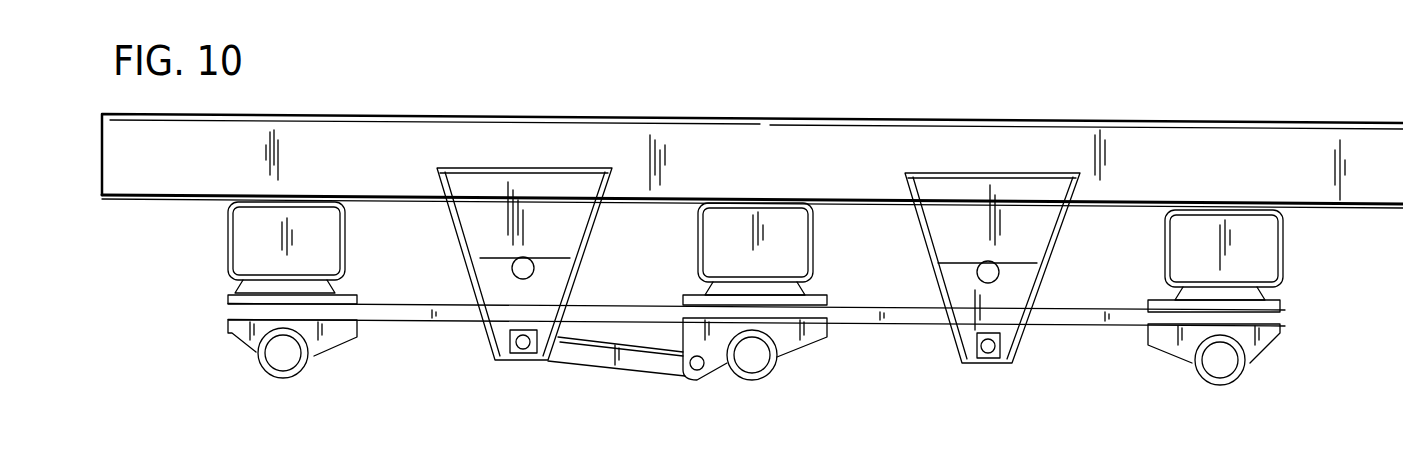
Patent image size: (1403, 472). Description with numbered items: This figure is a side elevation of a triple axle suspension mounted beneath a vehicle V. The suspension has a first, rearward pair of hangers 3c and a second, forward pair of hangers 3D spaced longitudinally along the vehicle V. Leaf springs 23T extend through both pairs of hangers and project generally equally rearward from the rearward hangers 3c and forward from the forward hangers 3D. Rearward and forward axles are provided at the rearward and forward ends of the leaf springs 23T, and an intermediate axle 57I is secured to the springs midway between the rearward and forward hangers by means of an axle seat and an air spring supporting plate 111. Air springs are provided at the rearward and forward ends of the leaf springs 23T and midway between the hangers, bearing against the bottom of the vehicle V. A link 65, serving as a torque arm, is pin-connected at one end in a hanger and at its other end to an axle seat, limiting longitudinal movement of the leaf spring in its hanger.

The vehicle V is at (1212, 115).
The forward pair of hangers 3D is at (489, 270).
The rearward pair of hangers 3c is at (962, 269).
The link 65 is at (597, 373).
The air spring supporting plate 111 is at (357, 293).
The intermediate axle 57I is at (770, 370).
The leaf springs 23T is at (656, 298).